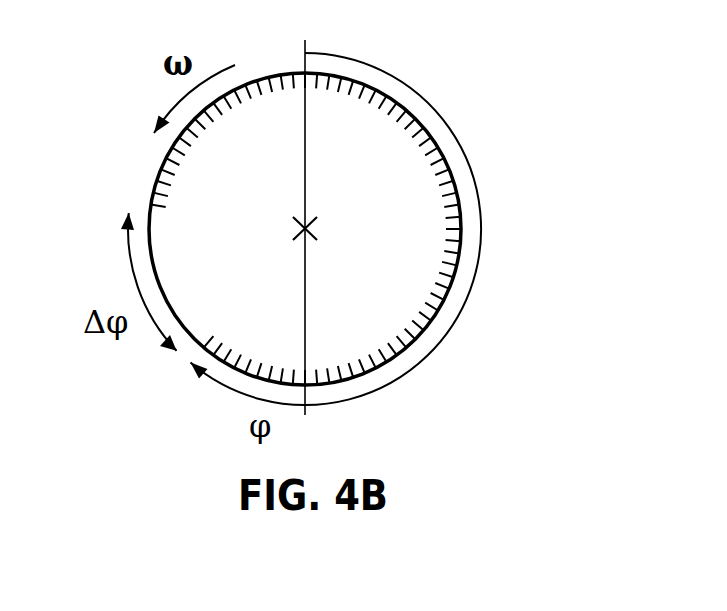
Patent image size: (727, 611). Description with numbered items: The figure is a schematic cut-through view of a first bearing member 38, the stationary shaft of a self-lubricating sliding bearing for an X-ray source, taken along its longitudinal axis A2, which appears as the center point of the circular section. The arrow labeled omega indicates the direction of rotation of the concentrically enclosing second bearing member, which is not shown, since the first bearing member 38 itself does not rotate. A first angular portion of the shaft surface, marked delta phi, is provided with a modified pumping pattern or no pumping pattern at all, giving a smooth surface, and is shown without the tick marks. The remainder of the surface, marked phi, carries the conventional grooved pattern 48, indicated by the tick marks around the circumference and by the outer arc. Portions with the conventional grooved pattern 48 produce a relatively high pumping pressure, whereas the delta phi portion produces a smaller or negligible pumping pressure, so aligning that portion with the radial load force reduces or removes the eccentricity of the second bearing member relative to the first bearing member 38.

The first bearing member 38 is at (363, 168).
The conventional grooved pattern 48 is at (445, 256).
The longitudinal axis A2 is at (325, 227).